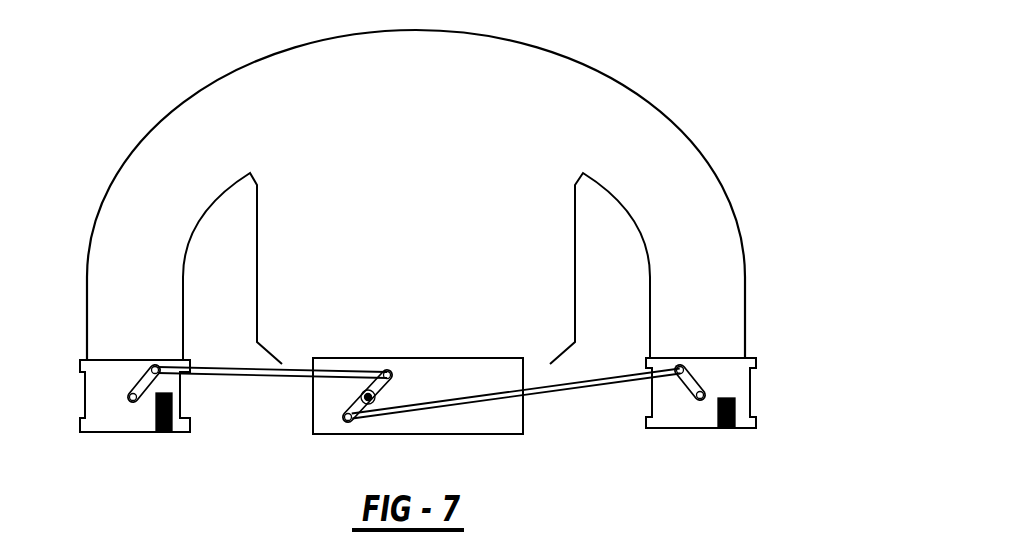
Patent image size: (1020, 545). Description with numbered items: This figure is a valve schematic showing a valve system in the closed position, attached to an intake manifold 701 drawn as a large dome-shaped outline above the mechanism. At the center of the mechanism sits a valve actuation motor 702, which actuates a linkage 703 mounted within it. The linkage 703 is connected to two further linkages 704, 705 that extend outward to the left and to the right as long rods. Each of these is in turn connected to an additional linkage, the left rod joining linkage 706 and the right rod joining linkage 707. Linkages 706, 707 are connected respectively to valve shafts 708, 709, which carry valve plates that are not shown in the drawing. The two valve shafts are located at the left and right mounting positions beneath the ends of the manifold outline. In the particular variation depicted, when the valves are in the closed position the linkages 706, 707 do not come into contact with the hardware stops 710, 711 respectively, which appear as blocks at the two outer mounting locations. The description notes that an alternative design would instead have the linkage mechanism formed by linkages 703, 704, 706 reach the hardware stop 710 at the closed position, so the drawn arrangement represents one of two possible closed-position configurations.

The intake manifold 701 is at (612, 78).
The valve actuation motor 702 is at (363, 434).
The linkage 703 is at (392, 387).
The linkage 704 is at (270, 380).
The linkage 705 is at (587, 387).
The linkage 706 is at (128, 370).
The linkage 707 is at (691, 372).
The valve shaft 708 is at (128, 398).
The valve shaft 709 is at (704, 393).
The hardware stop 710 is at (150, 432).
The hardware stop 711 is at (712, 428).